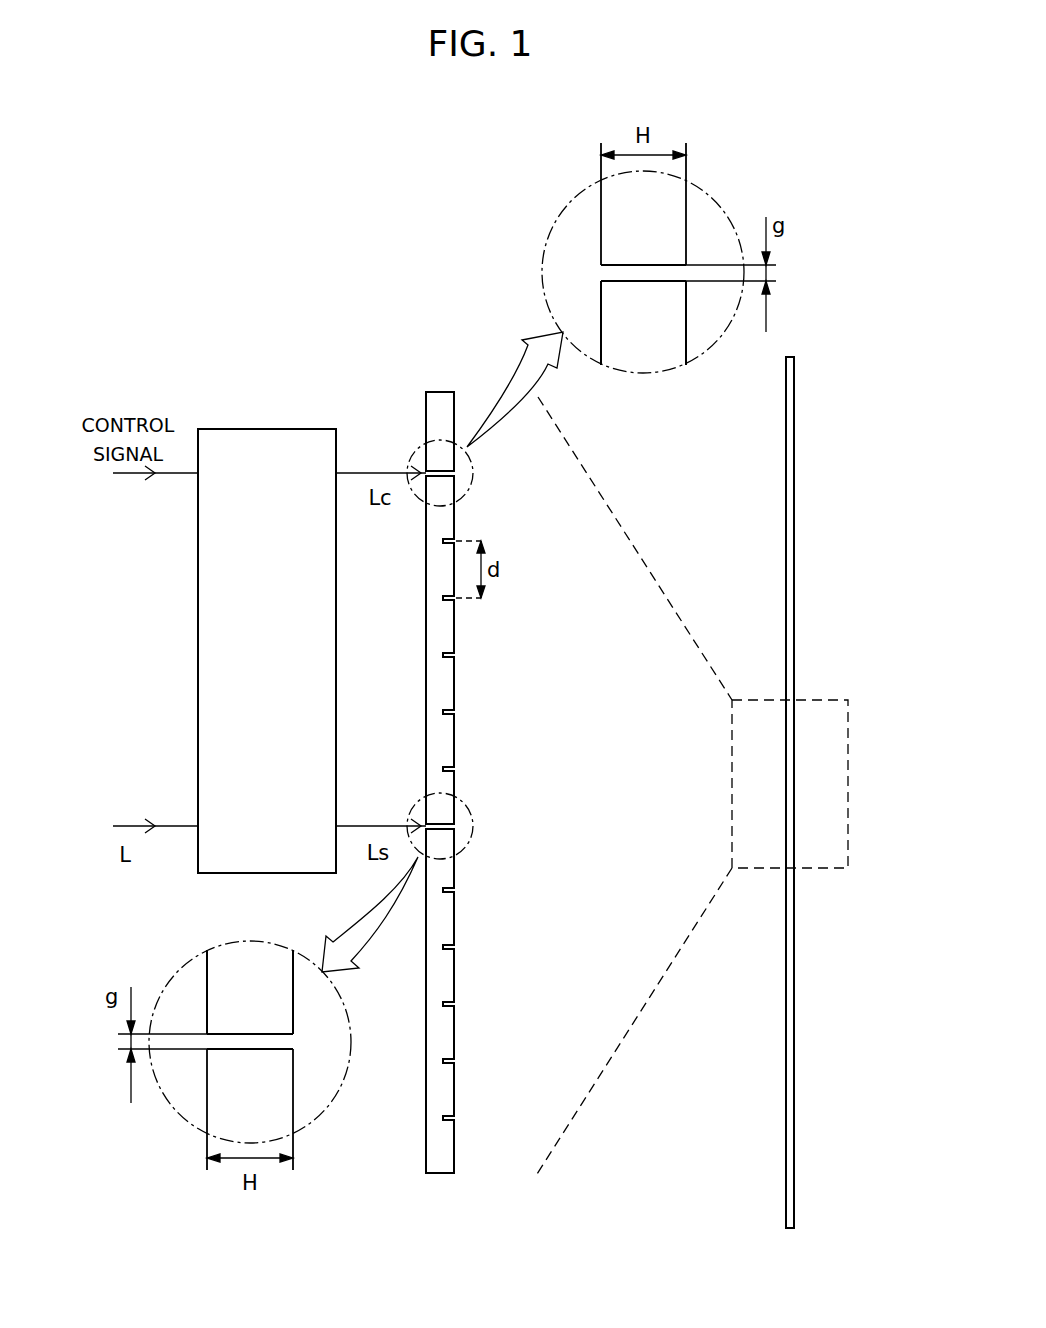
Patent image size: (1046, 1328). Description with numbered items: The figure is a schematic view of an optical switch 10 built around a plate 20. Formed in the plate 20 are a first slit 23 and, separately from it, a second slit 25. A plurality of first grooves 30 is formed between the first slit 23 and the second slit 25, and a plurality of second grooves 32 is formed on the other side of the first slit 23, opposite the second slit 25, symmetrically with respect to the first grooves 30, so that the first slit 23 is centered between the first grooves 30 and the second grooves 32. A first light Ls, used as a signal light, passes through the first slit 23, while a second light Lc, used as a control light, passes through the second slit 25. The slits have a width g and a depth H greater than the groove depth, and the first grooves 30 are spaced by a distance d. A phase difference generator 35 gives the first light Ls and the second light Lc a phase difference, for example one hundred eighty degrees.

The optical switch 10 is at (160, 353).
The plate 20 is at (442, 397).
The first slit 23 is at (456, 827).
The second slit 25 is at (456, 474).
The first grooves 30 is at (455, 655).
The second grooves 32 is at (455, 947).
The phase difference generator 35 is at (264, 432).